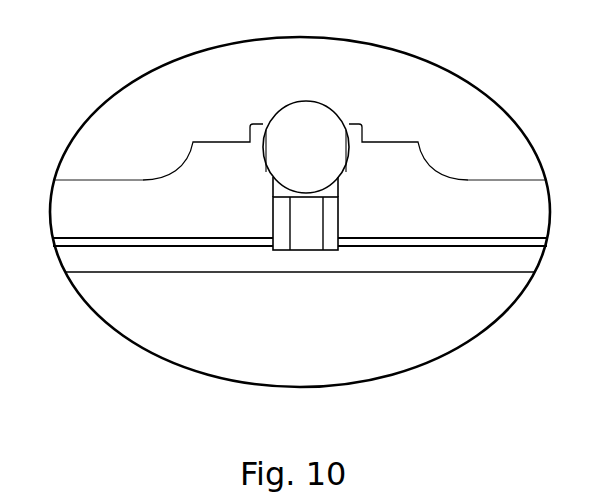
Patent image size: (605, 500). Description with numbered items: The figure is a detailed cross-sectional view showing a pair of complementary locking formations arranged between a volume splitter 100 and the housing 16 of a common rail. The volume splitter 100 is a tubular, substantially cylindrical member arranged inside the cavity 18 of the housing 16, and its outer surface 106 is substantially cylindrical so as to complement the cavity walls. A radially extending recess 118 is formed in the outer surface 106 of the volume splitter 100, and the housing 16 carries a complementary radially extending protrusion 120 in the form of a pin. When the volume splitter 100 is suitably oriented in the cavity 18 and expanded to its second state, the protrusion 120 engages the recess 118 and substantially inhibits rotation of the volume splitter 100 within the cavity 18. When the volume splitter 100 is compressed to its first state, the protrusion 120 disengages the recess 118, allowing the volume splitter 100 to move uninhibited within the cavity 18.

The volume splitter 100 is at (399, 252).
The housing 16 is at (460, 213).
The cavity 18 is at (92, 238).
The outer surface 106 is at (146, 246).
The radially extending recess 118 is at (292, 250).
The radially extending protrusion 120 is at (290, 223).